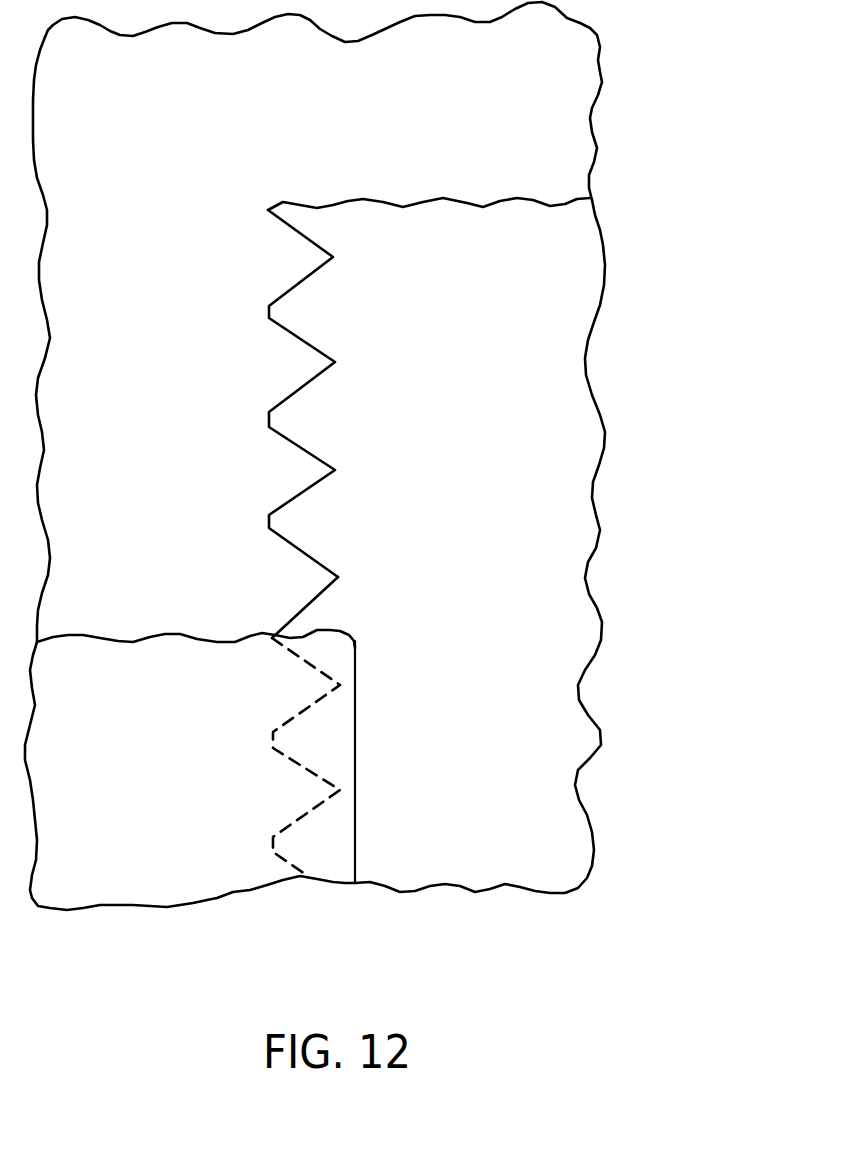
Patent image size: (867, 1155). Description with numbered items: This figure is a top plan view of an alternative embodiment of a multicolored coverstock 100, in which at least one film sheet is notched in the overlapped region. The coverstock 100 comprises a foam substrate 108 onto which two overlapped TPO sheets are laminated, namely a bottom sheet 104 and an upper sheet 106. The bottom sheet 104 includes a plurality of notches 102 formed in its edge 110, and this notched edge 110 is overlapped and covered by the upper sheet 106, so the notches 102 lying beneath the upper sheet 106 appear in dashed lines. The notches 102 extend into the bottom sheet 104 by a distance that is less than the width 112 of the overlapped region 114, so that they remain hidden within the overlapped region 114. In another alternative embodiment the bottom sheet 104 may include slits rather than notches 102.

The bonded assembly 100 is at (636, 101).
The teeth / serrations 102 is at (260, 249).
The second member 104 is at (449, 457).
The third member 106 is at (175, 773).
The first member 108 is at (414, 136).
The junction point 110 is at (254, 620).
The width of serrated region 112 is at (357, 912).
The gap 114 is at (338, 844).